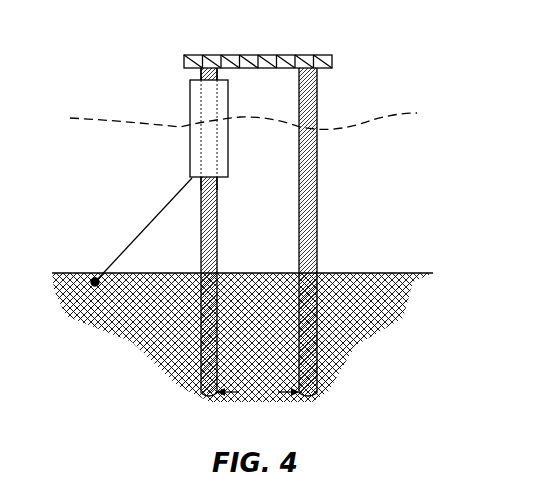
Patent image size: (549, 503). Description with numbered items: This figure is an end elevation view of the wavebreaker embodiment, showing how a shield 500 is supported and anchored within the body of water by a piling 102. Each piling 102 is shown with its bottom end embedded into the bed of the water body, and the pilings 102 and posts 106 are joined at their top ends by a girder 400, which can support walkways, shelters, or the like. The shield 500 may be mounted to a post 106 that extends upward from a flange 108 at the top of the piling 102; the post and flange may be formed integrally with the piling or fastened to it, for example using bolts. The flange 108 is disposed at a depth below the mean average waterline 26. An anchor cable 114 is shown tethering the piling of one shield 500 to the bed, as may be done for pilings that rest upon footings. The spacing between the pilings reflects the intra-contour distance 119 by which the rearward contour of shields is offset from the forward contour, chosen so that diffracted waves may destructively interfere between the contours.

The girder 400 is at (233, 55).
The post 106 is at (200, 74).
The mean average waterline 26 is at (88, 116).
The shield 500 is at (244, 131).
The anchor cable 114 is at (143, 222).
The flange 108 is at (222, 184).
The piling 102 is at (218, 238).
The intra-contour distance 119 is at (258, 392).